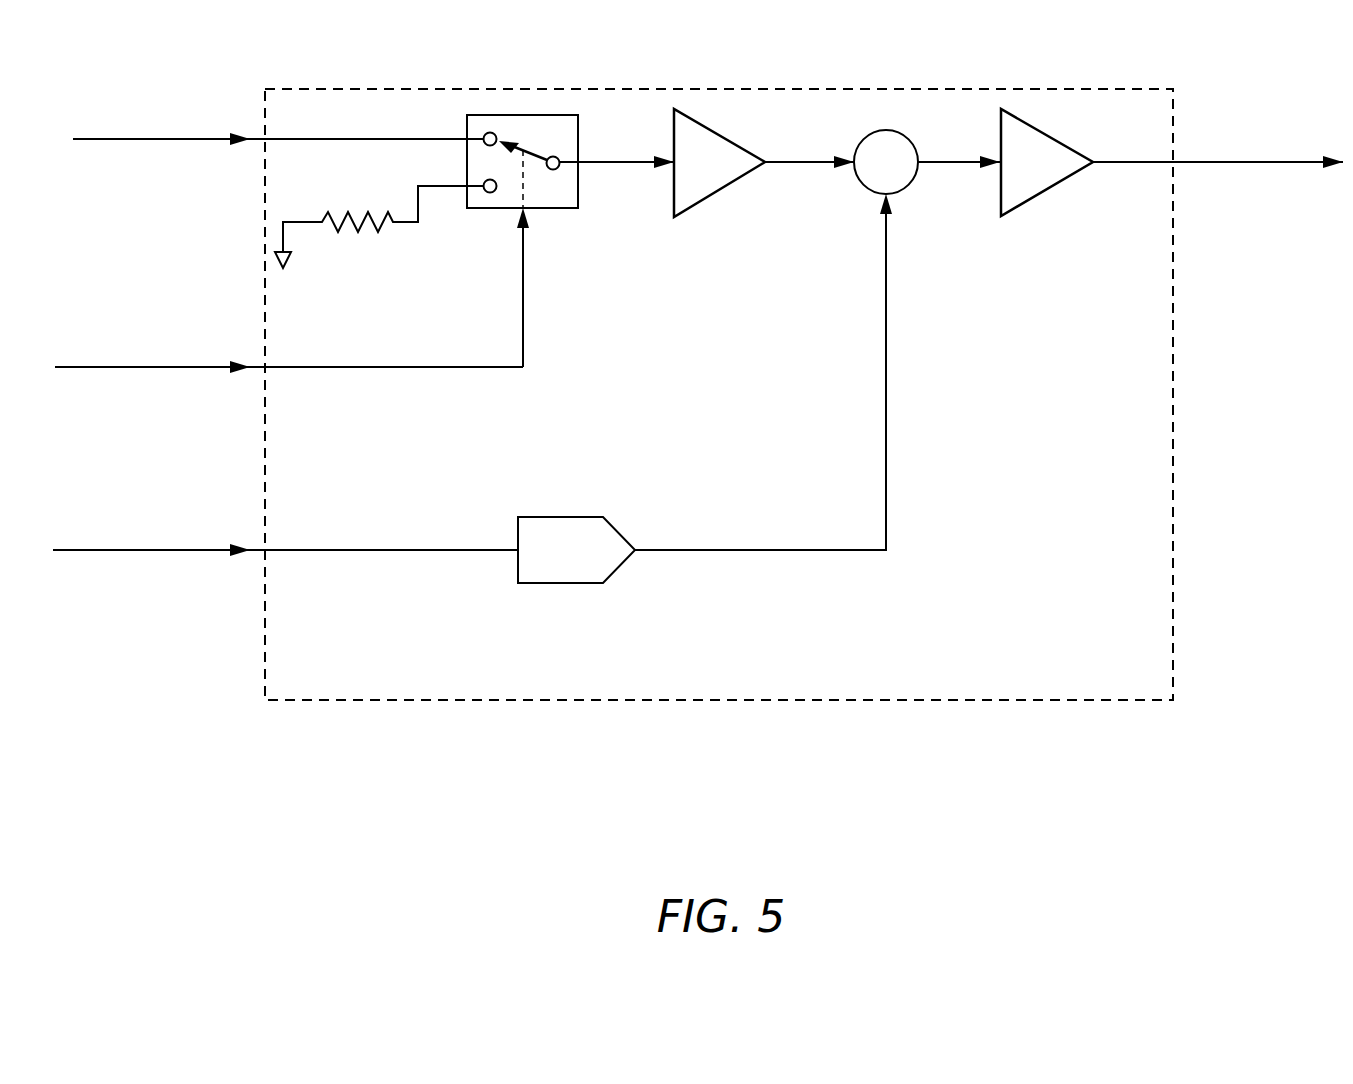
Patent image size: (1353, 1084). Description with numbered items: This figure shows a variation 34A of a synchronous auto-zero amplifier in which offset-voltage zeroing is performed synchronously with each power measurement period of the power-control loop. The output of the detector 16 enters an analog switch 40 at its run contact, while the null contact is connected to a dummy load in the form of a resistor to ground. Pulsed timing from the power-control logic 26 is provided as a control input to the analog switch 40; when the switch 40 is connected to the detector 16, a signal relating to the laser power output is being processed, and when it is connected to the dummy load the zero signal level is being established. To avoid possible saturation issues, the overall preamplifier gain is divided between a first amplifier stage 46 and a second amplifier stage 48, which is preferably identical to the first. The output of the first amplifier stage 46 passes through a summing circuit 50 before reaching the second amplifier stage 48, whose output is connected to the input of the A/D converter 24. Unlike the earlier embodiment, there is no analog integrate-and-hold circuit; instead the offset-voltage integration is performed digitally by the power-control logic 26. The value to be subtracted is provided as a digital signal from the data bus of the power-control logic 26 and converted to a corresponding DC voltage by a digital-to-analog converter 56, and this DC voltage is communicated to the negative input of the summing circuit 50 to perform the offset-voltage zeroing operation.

The synchronous auto-zero amplifier variation 34A is at (970, 712).
The detector 16 is at (278, 153).
The A/D converter 24 is at (1218, 191).
The power-control logic 26 is at (291, 420).
The analog switch 40 is at (553, 208).
The first amplifier stage 46 is at (698, 193).
The second amplifier stage 48 is at (1035, 186).
The summing circuit 50 is at (907, 188).
The digital-to-analog (D/A) converter 56 is at (572, 583).